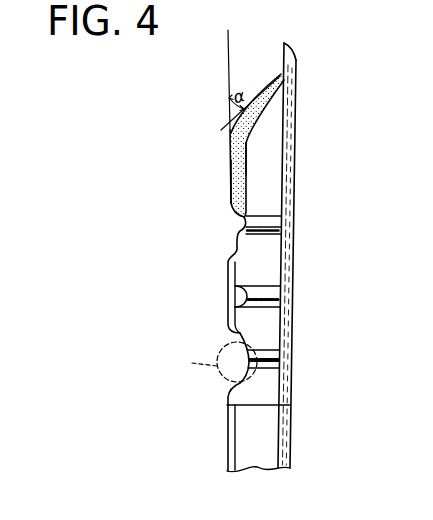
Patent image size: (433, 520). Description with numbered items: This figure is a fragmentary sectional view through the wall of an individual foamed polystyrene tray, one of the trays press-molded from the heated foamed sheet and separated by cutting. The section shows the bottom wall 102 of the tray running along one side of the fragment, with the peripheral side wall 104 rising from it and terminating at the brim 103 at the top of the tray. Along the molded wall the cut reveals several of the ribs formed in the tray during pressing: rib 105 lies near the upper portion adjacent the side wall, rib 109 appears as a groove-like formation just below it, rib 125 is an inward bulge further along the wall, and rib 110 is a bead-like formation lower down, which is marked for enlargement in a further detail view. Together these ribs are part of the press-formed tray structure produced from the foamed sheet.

The bottom wall 102 is at (232, 181).
The brim 103 is at (291, 60).
The peripheral side wall 104 is at (263, 95).
The rib 105 is at (245, 150).
The rib 109 is at (282, 229).
The rib 110 is at (262, 363).
The rib 125 is at (235, 278).